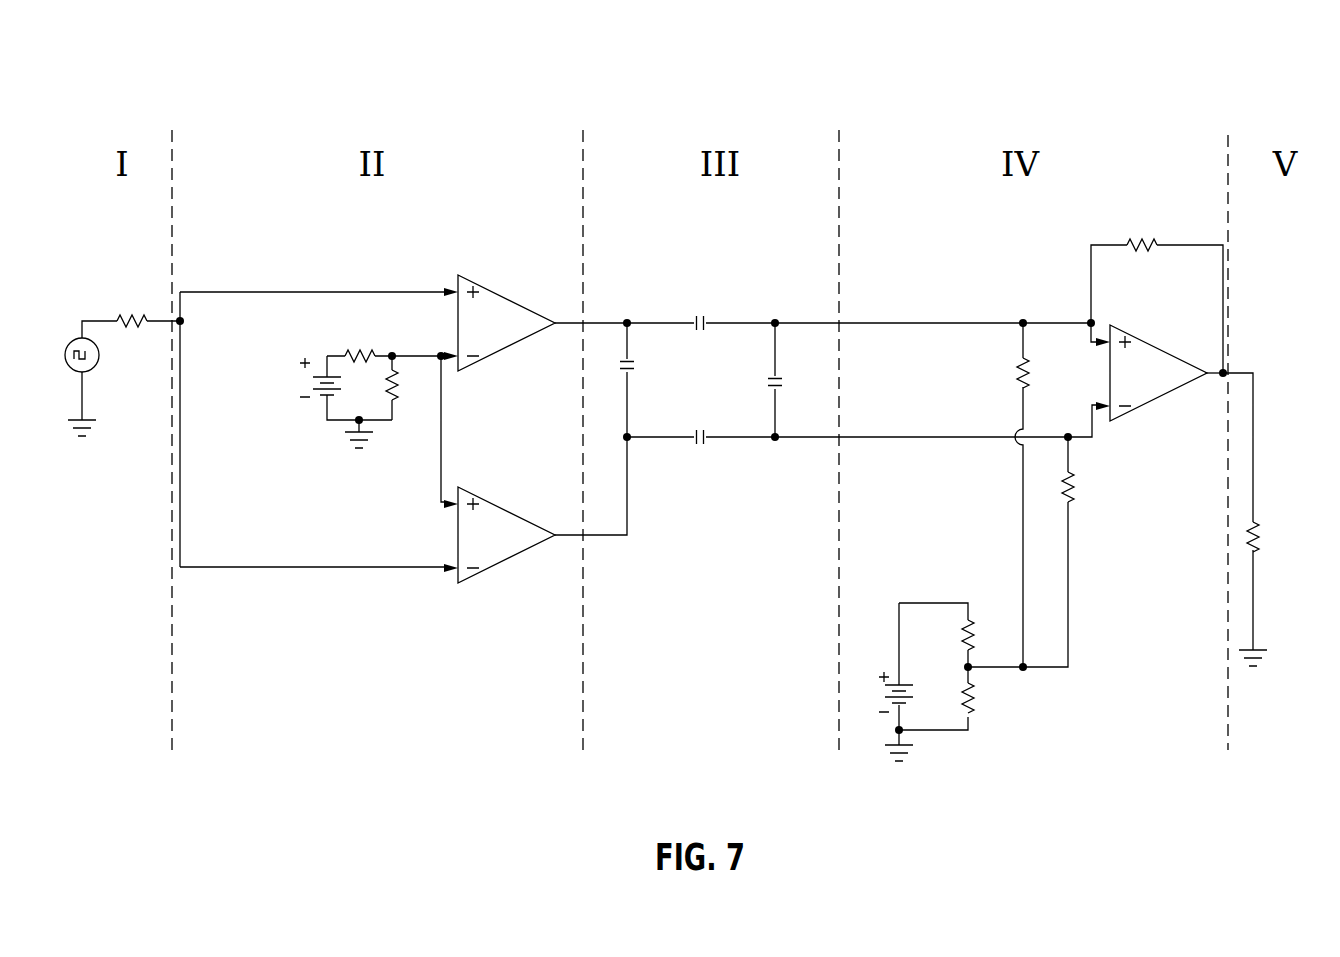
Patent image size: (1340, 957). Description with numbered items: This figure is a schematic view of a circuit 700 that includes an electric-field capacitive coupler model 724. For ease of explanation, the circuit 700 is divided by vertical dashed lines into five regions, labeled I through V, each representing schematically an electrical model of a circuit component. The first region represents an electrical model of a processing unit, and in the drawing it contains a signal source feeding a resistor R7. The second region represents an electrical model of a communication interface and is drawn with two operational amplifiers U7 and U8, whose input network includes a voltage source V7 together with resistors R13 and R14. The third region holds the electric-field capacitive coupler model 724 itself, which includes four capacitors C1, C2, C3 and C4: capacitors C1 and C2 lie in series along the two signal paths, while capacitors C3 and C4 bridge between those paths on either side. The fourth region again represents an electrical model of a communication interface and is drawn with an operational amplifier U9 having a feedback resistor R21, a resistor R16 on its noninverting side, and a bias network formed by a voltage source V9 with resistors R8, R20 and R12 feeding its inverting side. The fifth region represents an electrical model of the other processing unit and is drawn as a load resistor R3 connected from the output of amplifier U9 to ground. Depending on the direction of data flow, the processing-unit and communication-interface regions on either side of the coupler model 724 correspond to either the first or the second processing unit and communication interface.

The circuit 700 is at (1229, 96).
The electric-field capacitive coupler model 724 is at (733, 468).
The resistor R7 is at (133, 308).
The operational amplifier U7 is at (499, 311).
The operational amplifier U8 is at (499, 523).
The resistor R13 is at (357, 342).
The resistor R14 is at (413, 385).
The voltage source V7 is at (305, 379).
The capacitor C1 is at (701, 310).
The capacitor C2 is at (701, 424).
The capacitor C3 is at (641, 366).
The capacitor C4 is at (792, 383).
The resistor R16 is at (1000, 373).
The operational amplifier U9 is at (1151, 361).
The resistor R21 is at (1144, 232).
The resistor R3 is at (1271, 537).
The resistor R12 is at (1091, 487).
The voltage source V9 is at (879, 692).
The resistor R8 is at (987, 635).
The resistor R20 is at (993, 698).